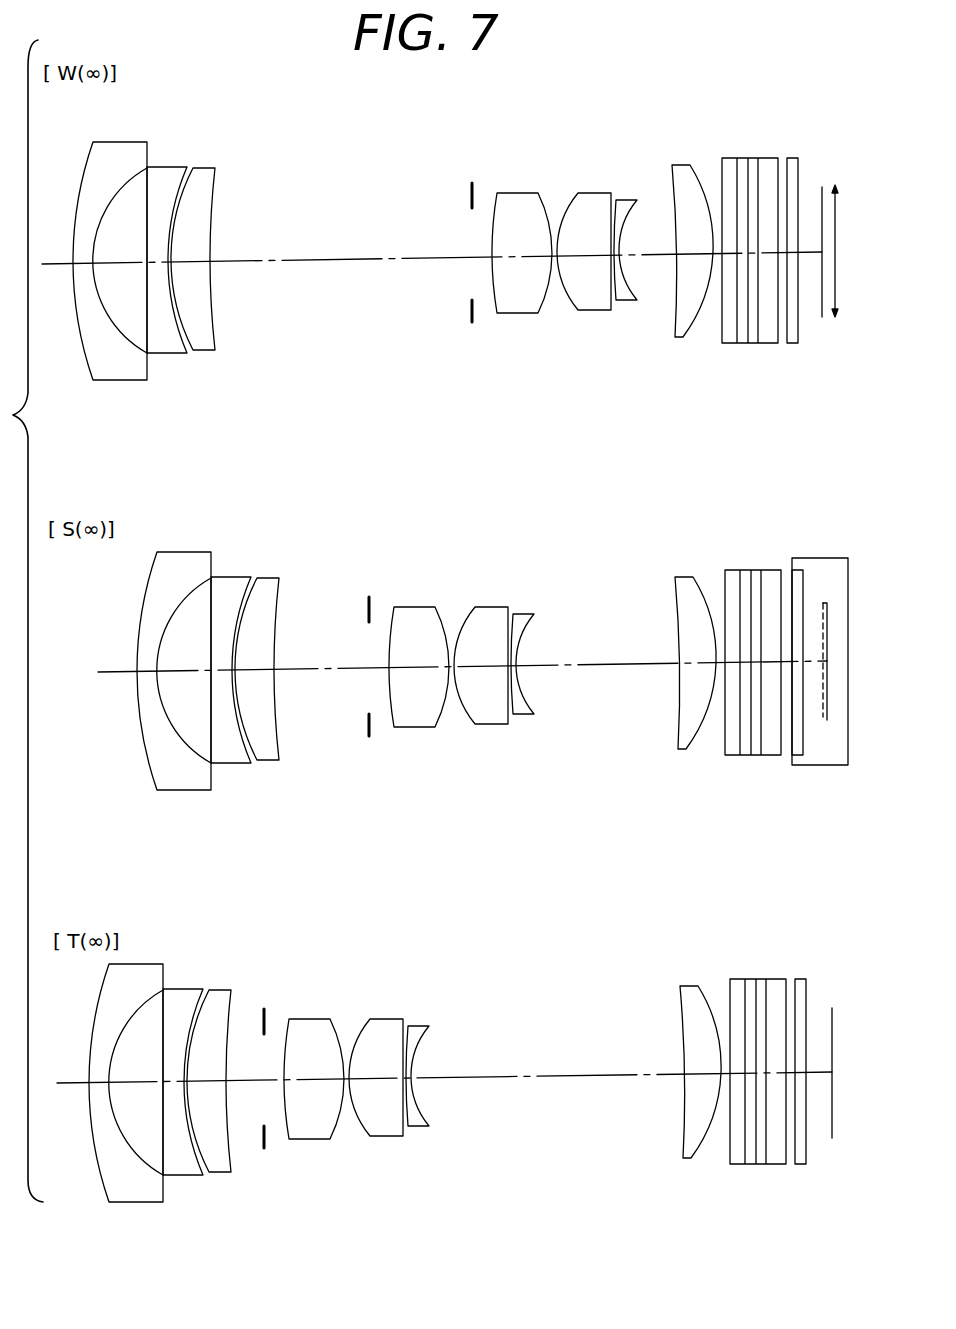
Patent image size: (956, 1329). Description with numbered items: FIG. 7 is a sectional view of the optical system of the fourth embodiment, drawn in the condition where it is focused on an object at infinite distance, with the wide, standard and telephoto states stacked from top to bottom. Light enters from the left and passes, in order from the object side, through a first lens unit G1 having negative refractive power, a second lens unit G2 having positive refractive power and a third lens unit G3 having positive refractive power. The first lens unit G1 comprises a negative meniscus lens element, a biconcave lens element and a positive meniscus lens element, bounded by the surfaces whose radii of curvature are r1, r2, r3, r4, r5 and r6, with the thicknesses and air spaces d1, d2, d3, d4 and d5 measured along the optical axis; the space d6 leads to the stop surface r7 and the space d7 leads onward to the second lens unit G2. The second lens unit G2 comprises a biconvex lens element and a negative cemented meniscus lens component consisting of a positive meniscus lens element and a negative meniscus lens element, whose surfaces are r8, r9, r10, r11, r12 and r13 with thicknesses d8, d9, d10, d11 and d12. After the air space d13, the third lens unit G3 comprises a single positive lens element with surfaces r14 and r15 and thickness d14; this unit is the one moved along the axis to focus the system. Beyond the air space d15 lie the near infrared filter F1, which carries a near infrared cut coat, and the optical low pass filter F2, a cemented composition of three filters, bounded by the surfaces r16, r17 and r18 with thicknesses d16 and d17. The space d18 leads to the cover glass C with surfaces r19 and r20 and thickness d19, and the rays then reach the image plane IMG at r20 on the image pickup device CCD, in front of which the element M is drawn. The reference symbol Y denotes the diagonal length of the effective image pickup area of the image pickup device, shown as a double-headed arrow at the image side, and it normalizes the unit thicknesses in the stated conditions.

The radius of curvature r1 is at (87, 163).
The radius of curvature r2 is at (122, 178).
The radius of curvature r3 is at (150, 187).
The radius of curvature r4 is at (180, 178).
The radius of curvature r5 is at (198, 182).
The radius of curvature r6 is at (222, 173).
The radius of curvature r7 is at (470, 203).
The radius of curvature r8 is at (493, 197).
The radius of curvature r9 is at (540, 200).
The radius of curvature r10 is at (570, 203).
The radius of curvature r11 is at (608, 213).
The radius of curvature r12 is at (630, 212).
The radius of curvature r13 is at (672, 183).
The radius of curvature r14 is at (693, 170).
The radius of curvature r15 is at (715, 172).
The radius of curvature r16 is at (730, 158).
The radius of curvature r17 is at (770, 160).
The radius of curvature r18 is at (780, 160).
The radius of curvature r19 is at (800, 160).
The radius of curvature r20 is at (822, 190).
The thickness d1 is at (85, 266).
The thickness d2 is at (125, 266).
The thickness d3 is at (158, 266).
The thickness d4 is at (170, 260).
The thickness d5 is at (197, 266).
The thickness d6 is at (342, 258).
The thickness d7 is at (487, 257).
The thickness d8 is at (517, 257).
The thickness d9 is at (555, 257).
The thickness d10 is at (587, 258).
The thickness d11 is at (618, 258).
The thickness d12 is at (653, 253).
The thickness d13 is at (683, 253).
The thickness d14 is at (712, 253).
The thickness d15 is at (730, 253).
The thickness d16 is at (747, 253).
The thickness d17 is at (783, 253).
The thickness d18 is at (793, 253).
The thickness d19 is at (807, 253).
The first lens unit G1 is at (144, 261).
The second lens unit G2 is at (564, 253).
The third lens unit G3 is at (692, 251).
The near infrared filter F1 is at (733, 750).
The optical low pass filter F2 is at (783, 765).
The cover glass C is at (788, 583).
The microlens array M is at (822, 710).
The CCD image sensor CCD is at (835, 767).
The image plane IMG is at (823, 600).
The diagonal length of effective image pickup area Y is at (841, 251).